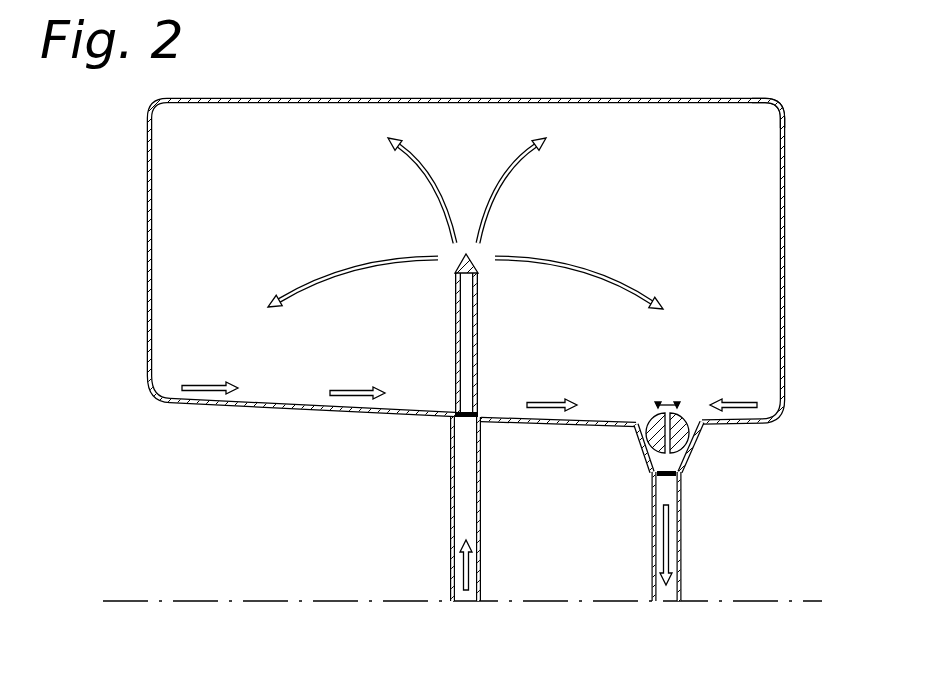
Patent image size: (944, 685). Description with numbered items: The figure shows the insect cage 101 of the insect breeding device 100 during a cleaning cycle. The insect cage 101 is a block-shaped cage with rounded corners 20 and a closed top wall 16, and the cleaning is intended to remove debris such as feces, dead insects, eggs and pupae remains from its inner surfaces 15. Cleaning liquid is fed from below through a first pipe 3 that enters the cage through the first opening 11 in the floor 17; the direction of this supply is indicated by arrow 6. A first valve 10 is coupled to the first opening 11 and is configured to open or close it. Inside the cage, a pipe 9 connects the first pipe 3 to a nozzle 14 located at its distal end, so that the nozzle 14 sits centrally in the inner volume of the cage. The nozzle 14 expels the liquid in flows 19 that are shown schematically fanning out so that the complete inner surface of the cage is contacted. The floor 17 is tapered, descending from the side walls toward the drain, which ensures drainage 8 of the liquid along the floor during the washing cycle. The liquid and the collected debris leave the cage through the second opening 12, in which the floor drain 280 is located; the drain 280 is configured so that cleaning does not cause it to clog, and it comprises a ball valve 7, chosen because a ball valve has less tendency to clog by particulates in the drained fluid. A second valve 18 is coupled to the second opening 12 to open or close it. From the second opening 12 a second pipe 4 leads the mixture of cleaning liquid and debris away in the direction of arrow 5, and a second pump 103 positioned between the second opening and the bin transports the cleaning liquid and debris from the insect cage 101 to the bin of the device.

The insect breeding device 100 is at (86, 515).
The insect cage 101 is at (801, 97).
The first pipe 3 is at (481, 518).
The second pipe 4 is at (652, 550).
The arrow (expelling direction) 5 is at (680, 582).
The arrow (cleaning liquid flow) 6 is at (463, 573).
The ball valve 7 is at (705, 428).
The drainage 8 is at (340, 393).
The pipe 9 is at (478, 353).
The first valve 10 is at (470, 418).
The first opening 11 is at (440, 425).
The second opening 12 is at (706, 435).
The nozzle 14 is at (468, 268).
The inner surfaces 15 is at (783, 258).
The top wall 16 is at (398, 98).
The floor 17 is at (602, 425).
The second valve 18 is at (668, 405).
The flows of cleaning liquid 19 is at (384, 138).
The rounded corners 20 is at (150, 395).
The second pump 103 is at (665, 495).
The drain 280 is at (667, 447).